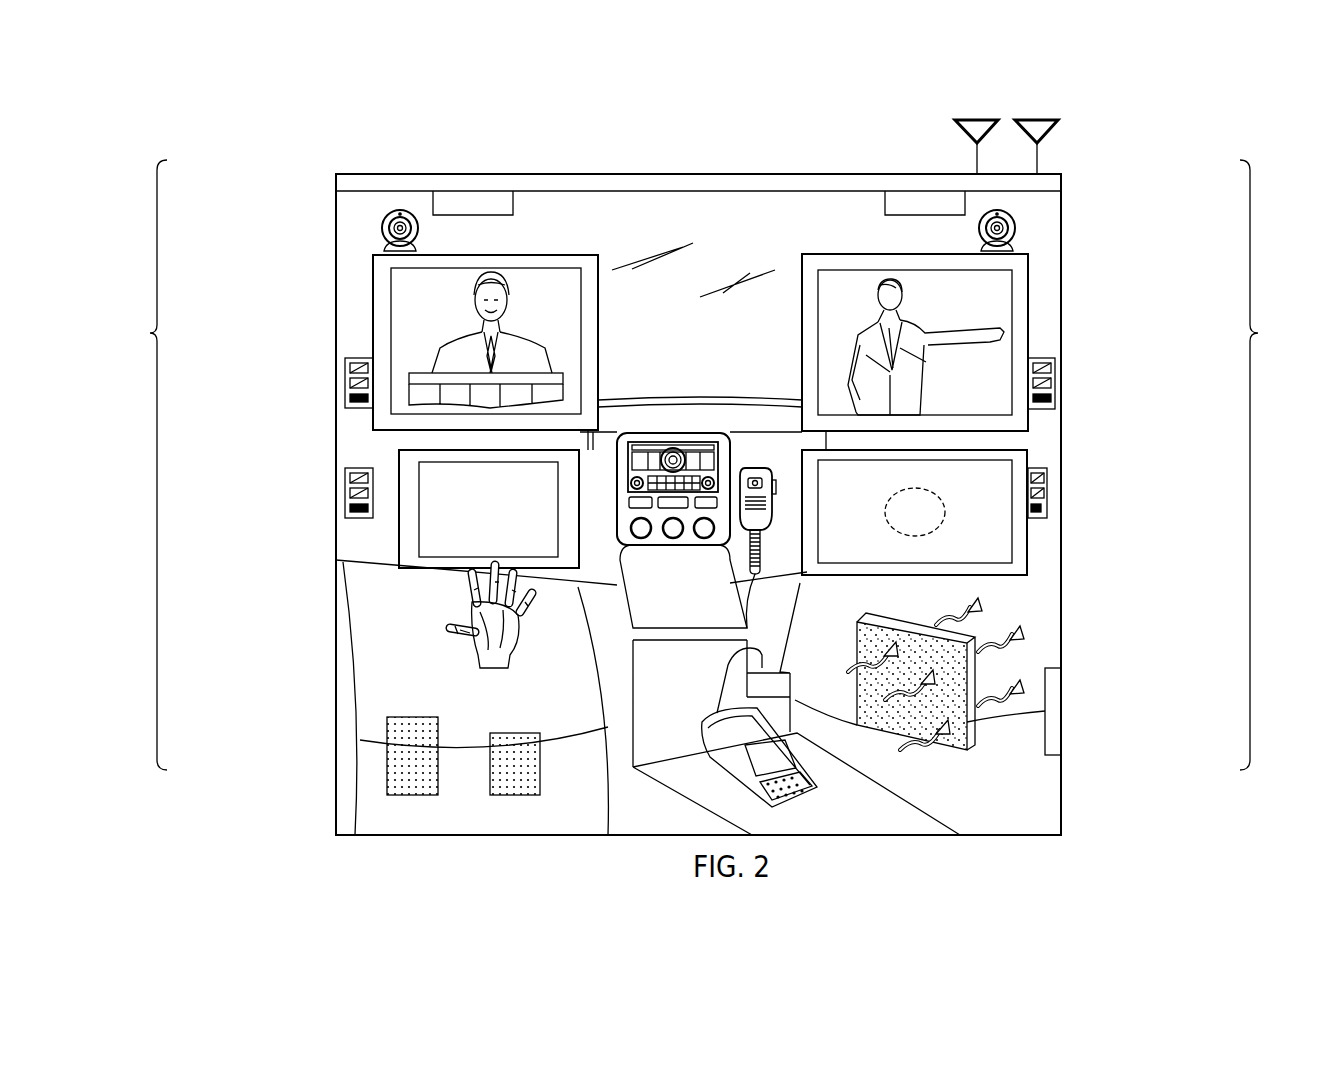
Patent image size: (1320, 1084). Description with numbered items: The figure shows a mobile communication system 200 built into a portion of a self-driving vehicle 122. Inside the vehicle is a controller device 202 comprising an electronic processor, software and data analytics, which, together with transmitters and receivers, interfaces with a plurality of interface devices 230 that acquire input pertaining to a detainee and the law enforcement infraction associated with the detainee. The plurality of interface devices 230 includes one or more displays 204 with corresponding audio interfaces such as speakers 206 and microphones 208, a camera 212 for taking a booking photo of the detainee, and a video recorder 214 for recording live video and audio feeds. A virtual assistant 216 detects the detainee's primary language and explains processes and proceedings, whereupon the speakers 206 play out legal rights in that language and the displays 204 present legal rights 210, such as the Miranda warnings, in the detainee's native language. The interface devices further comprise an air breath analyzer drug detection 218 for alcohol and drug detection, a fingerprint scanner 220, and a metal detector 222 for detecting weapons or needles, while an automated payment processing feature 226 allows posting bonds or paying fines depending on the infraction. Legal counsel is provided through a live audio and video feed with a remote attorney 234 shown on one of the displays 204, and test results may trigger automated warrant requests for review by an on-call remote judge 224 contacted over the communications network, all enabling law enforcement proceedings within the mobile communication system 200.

The self-driving vehicle 122 is at (770, 174).
The mobile communication system 200 is at (233, 804).
The controller device 202 is at (735, 470).
The displays 204 is at (373, 342).
The speakers 206 is at (345, 367).
The microphones 208 is at (350, 398).
The legal rights 210 is at (398, 458).
The camera 212 is at (380, 224).
The video recorder 214 is at (1015, 230).
The virtual assistant 216 is at (1028, 460).
The air breathalyzer 218 is at (1020, 628).
The fingerprint scanner 220 is at (478, 625).
The metal detector 222 is at (1050, 715).
The remote judge 224 is at (373, 312).
The automated payment processing feature 226 is at (705, 745).
The plurality of interface devices 230 is at (704, 465).
The remote attorney 234 is at (1028, 305).